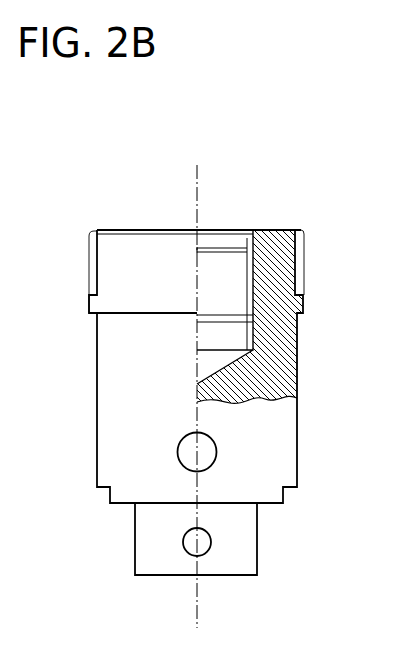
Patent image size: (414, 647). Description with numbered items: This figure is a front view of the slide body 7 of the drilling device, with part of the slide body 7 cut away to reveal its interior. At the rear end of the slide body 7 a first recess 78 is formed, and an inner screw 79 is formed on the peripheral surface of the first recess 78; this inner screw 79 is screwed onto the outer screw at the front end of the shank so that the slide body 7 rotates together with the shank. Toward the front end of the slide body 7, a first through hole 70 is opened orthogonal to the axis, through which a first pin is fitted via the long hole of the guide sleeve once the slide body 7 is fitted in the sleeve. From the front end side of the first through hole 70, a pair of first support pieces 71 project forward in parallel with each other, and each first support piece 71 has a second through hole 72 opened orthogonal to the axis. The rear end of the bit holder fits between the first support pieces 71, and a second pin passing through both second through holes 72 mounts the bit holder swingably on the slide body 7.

The slide body 7 is at (296, 356).
The first recess 78 is at (248, 238).
The inner screw 79 is at (240, 277).
The first through hole 70 is at (216, 446).
The first support piece 71 is at (258, 530).
The second through hole 72 is at (211, 545).